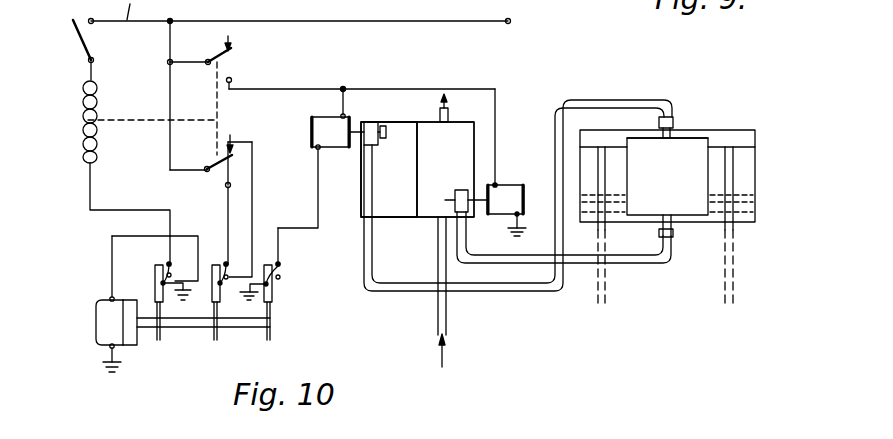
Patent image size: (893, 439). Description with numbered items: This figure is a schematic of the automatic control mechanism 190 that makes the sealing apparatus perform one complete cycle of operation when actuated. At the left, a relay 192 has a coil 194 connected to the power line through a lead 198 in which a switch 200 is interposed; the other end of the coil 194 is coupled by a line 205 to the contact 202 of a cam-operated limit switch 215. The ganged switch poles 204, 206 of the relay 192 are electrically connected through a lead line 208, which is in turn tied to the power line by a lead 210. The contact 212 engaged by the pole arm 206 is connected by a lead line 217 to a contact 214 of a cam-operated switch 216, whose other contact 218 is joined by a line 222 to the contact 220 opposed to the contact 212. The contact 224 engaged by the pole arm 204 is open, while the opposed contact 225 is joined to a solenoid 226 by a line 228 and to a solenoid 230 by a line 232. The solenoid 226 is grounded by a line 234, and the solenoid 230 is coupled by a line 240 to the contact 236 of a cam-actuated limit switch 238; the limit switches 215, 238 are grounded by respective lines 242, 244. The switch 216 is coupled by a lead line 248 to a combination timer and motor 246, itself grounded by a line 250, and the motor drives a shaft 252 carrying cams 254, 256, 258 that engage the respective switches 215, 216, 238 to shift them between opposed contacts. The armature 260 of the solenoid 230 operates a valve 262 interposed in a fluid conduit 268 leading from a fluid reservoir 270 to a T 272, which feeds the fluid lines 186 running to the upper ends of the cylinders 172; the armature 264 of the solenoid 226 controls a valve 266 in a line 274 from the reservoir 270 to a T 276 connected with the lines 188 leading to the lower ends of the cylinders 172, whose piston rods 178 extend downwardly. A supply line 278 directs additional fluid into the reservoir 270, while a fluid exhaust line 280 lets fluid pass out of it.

The cylinder 172 is at (707, 167).
The piston rod 178 is at (601, 227).
The fluid line 186 is at (667, 144).
The fluid line 188 is at (640, 219).
The automatic control mechanism 190 is at (495, 89).
The relay 192 is at (128, 118).
The coil 194 is at (83, 113).
The lead 198 is at (89, 74).
The switch 200 is at (71, 44).
The contact 202 is at (169, 260).
The switch pole 204 is at (224, 57).
The line 205 is at (117, 209).
The switch pole 206 is at (210, 187).
The lead line 208 is at (171, 105).
The lead 210 is at (176, 37).
The contact 212 is at (231, 184).
The contact 214 is at (246, 240).
The cam-operated limit switch 215 is at (156, 278).
The cam-operated switch 216 is at (214, 303).
The lead line 217 is at (230, 216).
The contact 218 is at (230, 276).
The contact 220 is at (246, 132).
The line 222 is at (250, 163).
The contact 224 is at (233, 40).
The contact 225 is at (232, 80).
The solenoid 226 is at (509, 184).
The line 228 is at (370, 89).
The solenoid 230 is at (333, 140).
The line 232 is at (341, 102).
The line 234 is at (514, 226).
The contact 236 is at (280, 263).
The cam-actuated limit switch 238 is at (274, 293).
The line 240 is at (306, 229).
The line 242 is at (176, 282).
The line 244 is at (273, 310).
The combination timer and motor 246 is at (103, 335).
The lead line 248 is at (111, 250).
The line 250 is at (115, 360).
The shaft 252 is at (183, 323).
The cam 254 is at (166, 342).
The cam 256 is at (217, 332).
The cam 258 is at (273, 337).
The armature 260 is at (382, 123).
The valve 262 is at (378, 138).
The armature 264 is at (456, 166).
The valve 266 is at (436, 169).
The fluid conduit 268 is at (488, 289).
The fluid reservoir 270 is at (466, 129).
The T 272 is at (672, 125).
The line 274 is at (630, 262).
The T 276 is at (667, 217).
The supply line 278 is at (438, 320).
The fluid exhaust line 280 is at (450, 110).